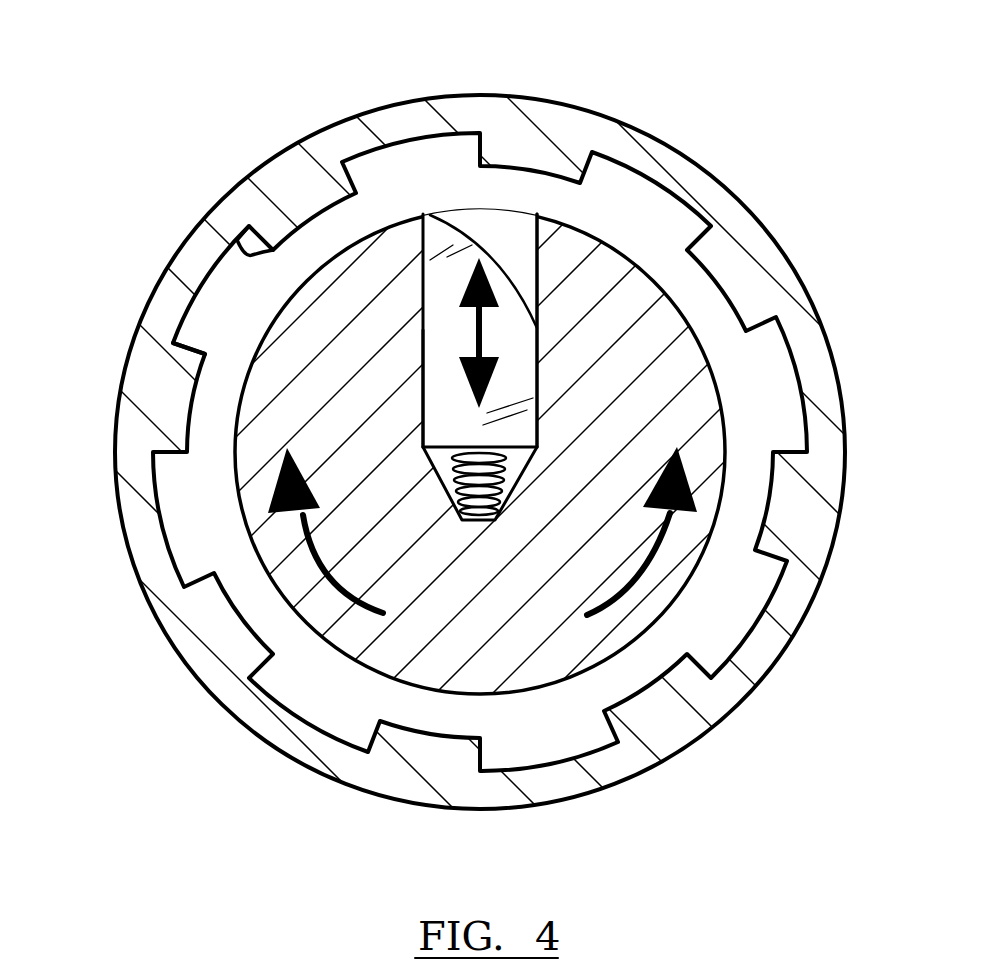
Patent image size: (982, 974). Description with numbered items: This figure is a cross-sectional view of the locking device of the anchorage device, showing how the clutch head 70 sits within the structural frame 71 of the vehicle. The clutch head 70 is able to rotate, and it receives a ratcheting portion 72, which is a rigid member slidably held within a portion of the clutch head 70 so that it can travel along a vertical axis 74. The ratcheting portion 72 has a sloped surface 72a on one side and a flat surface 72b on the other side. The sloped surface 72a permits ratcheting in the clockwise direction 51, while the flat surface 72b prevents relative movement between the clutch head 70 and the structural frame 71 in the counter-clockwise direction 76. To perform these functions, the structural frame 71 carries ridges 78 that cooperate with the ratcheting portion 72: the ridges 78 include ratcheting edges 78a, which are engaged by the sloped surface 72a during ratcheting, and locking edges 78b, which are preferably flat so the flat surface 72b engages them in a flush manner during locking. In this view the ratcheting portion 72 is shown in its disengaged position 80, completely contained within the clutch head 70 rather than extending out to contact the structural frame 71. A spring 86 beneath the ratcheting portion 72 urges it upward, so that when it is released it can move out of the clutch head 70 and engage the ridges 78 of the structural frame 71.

The clockwise direction 51 is at (317, 555).
The clutch head 70 is at (690, 320).
The structural frame 71 is at (170, 262).
The ratcheting portion 72 is at (480, 328).
The sloped surface 72a is at (500, 255).
The flat surface 72b is at (430, 216).
The vertical axis 74 is at (545, 300).
The counter-clockwise direction 76 is at (637, 582).
The ridges 78 is at (190, 432).
The ratcheting edges 78a is at (240, 237).
The locking edges 78b is at (192, 350).
The disengaged position 80 is at (478, 222).
The spring 86 is at (525, 468).